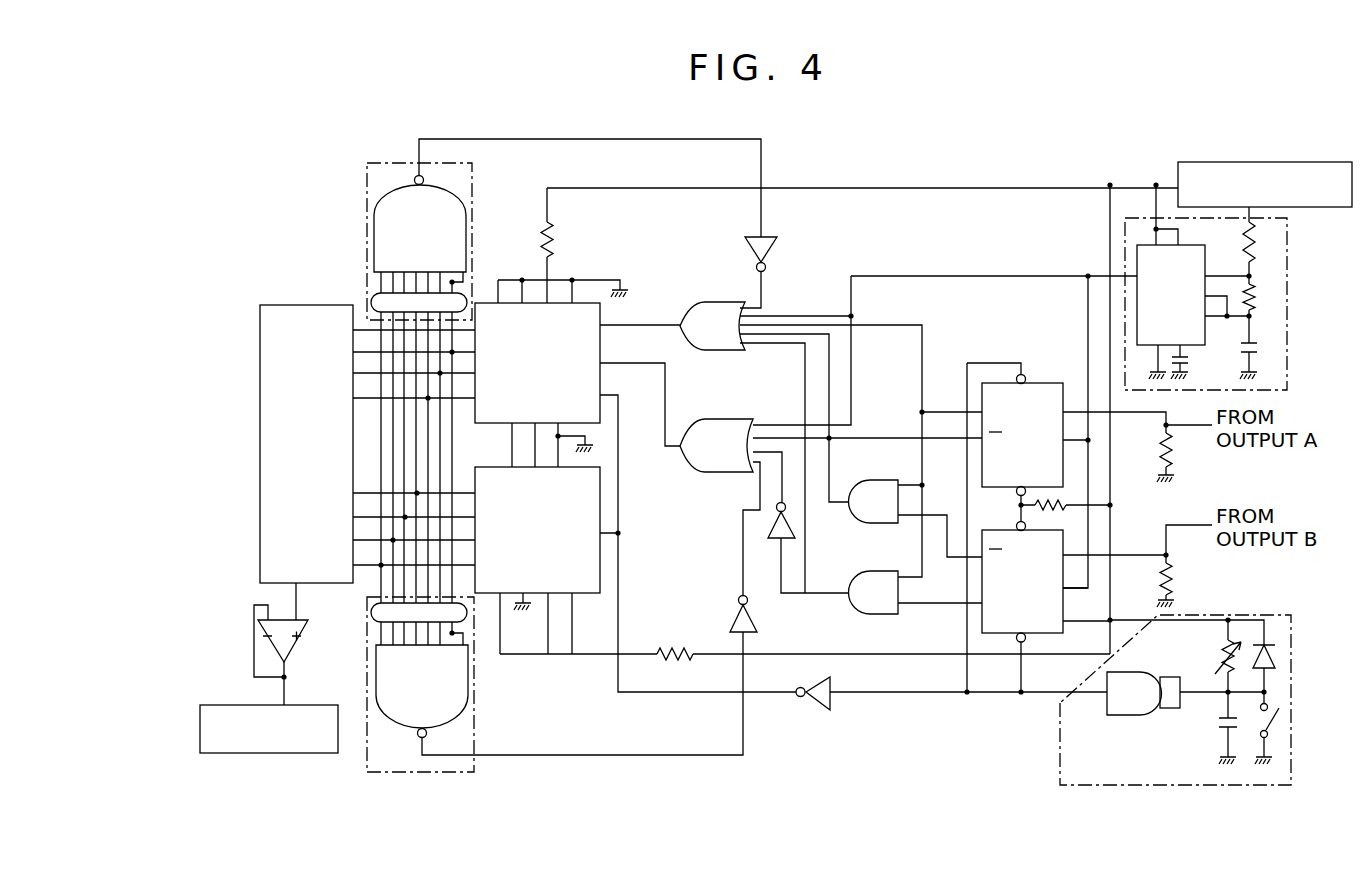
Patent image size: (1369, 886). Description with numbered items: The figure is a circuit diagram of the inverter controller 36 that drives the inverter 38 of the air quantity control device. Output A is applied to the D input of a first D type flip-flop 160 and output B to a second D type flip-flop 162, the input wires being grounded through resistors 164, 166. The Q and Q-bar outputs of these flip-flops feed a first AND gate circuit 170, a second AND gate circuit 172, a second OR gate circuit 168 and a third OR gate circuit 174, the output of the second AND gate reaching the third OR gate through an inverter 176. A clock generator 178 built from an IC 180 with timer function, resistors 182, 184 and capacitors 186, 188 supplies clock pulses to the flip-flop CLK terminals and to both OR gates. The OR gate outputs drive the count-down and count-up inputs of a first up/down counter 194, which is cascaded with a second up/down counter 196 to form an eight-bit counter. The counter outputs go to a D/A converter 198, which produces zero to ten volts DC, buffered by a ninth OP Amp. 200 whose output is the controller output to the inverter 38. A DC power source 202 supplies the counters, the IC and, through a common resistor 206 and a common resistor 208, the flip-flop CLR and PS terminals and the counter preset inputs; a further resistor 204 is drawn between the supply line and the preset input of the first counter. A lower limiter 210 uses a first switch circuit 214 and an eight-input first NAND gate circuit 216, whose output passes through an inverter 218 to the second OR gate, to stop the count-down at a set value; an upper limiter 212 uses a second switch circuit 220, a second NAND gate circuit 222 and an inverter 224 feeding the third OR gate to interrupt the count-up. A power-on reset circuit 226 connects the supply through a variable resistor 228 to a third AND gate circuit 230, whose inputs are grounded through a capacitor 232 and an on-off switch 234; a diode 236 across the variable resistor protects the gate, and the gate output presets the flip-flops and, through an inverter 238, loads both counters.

The inverter controller 36 is at (949, 174).
The inverter 38 is at (268, 755).
The first D type flip-flop 160 is at (1026, 381).
The second D type flip-flop 162 is at (1063, 619).
The resistor 164 is at (1171, 451).
The resistor 166 is at (1171, 565).
The second OR gate circuit 168 is at (701, 303).
The first AND gate circuit 170 is at (876, 480).
The second AND gate circuit 172 is at (876, 571).
The third OR gate circuit 174 is at (710, 419).
The inverter 176 is at (773, 539).
The clock generator 178 is at (1287, 265).
The IC 180 is at (1214, 255).
The resistor 182 is at (1251, 250).
The resistor 184 is at (1251, 301).
The capacitor 186 is at (1255, 354).
The capacitor 188 is at (1194, 364).
The first up/down counter 194 is at (602, 345).
The second up/down counter 196 is at (483, 452).
The D/A converter 198 is at (260, 423).
The ninth OP Amp. 200 is at (296, 648).
The DC power source 202 is at (1290, 162).
The resistor 204 is at (553, 238).
The common resistor 206 is at (1058, 497).
The common resistor 208 is at (682, 633).
The lower limiter 210 is at (389, 162).
The upper limiter 212 is at (475, 703).
The first switch circuit 214 is at (376, 296).
The first NAND gate circuit 216 is at (466, 212).
The inverter 218 is at (777, 247).
The second switch circuit 220 is at (372, 614).
The second NAND gate circuit 222 is at (470, 677).
The inverter 224 is at (757, 617).
The power-on reset circuit 226 is at (1292, 690).
The variable resistor 228 is at (1226, 653).
The third AND gate circuit 230 is at (1130, 716).
The capacitor 232 is at (1221, 722).
The on-off switch 234 is at (1278, 725).
The diode 236 is at (1278, 656).
The inverter 238 is at (815, 711).